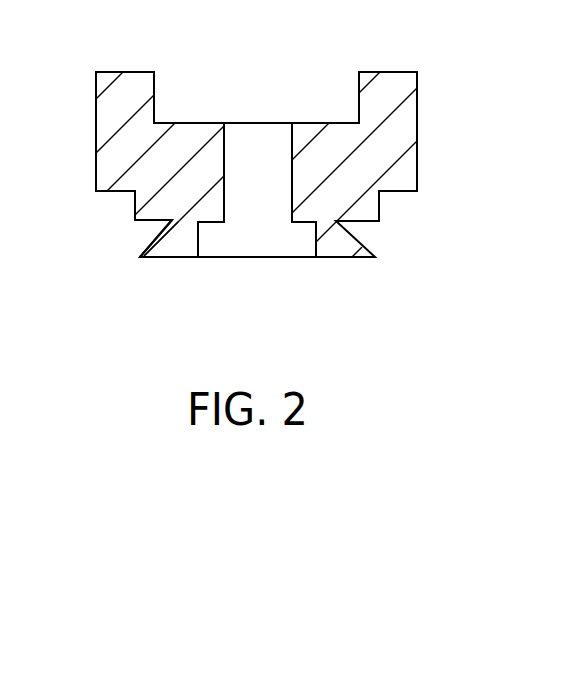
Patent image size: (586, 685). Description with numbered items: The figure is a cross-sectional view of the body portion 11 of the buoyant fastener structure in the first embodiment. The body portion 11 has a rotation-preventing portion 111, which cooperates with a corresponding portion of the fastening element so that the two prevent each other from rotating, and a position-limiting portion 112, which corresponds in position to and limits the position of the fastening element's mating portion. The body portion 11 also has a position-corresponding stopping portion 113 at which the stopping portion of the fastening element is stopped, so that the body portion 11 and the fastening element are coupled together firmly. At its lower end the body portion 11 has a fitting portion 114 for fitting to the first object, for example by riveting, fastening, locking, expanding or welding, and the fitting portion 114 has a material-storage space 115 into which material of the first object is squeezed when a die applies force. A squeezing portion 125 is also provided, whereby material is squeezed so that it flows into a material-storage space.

The body portion 11 is at (380, 42).
The rotation-preventing portion 111 is at (155, 86).
The position-limiting portion 112 is at (247, 110).
The position-corresponding stopping portion 113 is at (212, 228).
The fitting portion 114 is at (177, 247).
The material-storage space 115 is at (168, 225).
The squeezing portion 125 is at (135, 207).